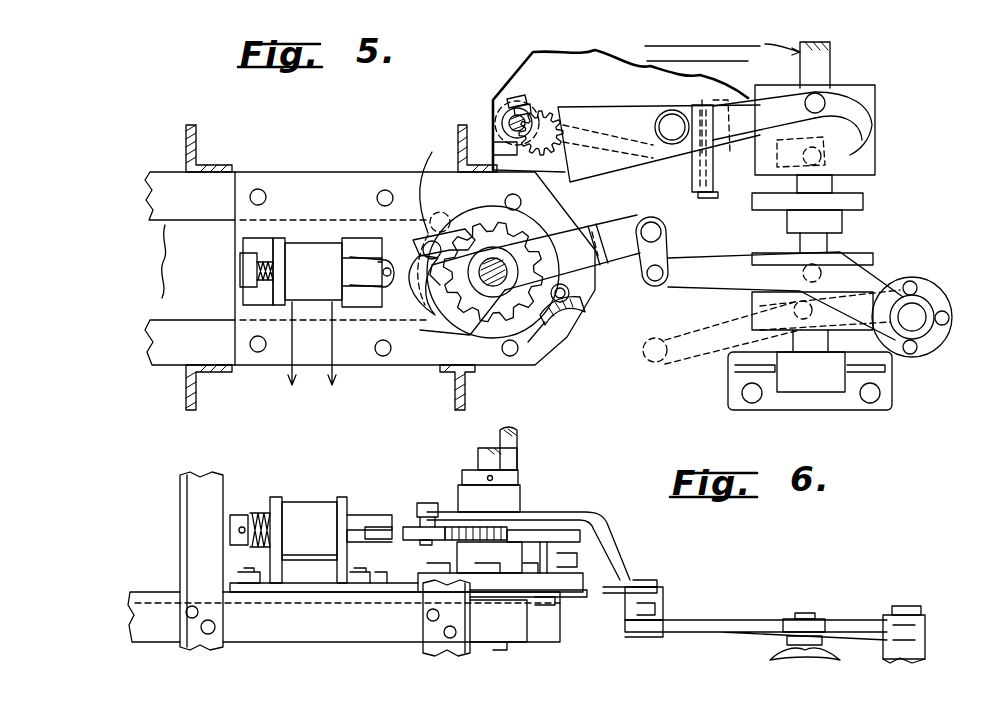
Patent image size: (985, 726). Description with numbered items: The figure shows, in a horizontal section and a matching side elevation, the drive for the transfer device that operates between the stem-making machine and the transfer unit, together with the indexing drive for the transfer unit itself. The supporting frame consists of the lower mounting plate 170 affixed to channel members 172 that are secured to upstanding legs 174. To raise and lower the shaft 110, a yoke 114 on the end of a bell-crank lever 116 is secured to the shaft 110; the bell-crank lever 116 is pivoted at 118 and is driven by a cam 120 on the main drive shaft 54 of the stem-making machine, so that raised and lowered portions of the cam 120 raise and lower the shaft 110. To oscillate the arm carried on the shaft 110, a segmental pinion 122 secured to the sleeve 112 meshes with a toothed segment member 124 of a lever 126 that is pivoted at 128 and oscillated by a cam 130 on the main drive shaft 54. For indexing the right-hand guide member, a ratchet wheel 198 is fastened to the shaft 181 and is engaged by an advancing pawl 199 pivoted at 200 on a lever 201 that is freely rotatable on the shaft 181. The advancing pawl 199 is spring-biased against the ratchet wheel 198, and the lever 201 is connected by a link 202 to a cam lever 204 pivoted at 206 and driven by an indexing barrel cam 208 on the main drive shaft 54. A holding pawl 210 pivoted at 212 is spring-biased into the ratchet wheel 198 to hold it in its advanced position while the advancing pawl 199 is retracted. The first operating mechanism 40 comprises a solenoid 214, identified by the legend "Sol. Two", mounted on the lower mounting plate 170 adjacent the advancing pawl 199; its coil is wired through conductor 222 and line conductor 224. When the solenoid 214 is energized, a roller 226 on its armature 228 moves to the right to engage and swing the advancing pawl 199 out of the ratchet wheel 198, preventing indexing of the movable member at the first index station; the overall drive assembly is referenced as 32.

In FIG. 5, the drive mechanism 32 is at (545, 343).
In FIG. 6, the drive mechanism 32 is at (552, 622).
In FIG. 5, the first operating mechanism 40 is at (317, 246).
In FIG. 6, the first operating mechanism 40 is at (308, 508).
In FIG. 5, the main drive shaft 54 is at (830, 62).
In FIG. 5, the shaft 110 is at (505, 120).
In FIG. 6, the shaft 110 is at (517, 440).
In FIG. 5, the sleeve 112 is at (523, 106).
In FIG. 5, the yoke 114 is at (517, 98).
In FIG. 5, the bell-crank lever 116 is at (690, 182).
In FIG. 5, the pivot 118 is at (708, 198).
In FIG. 5, the cam 120 is at (863, 200).
In FIG. 5, the segmental pinion 122 is at (548, 104).
In FIG. 5, the toothed segment member 124 is at (630, 115).
In FIG. 5, the lever 126 is at (750, 105).
In FIG. 5, the pivot 128 is at (670, 118).
In FIG. 5, the cam 130 is at (875, 143).
In FIG. 5, the lower mounting plate 170 is at (268, 174).
In FIG. 6, the lower mounting plate 170 is at (368, 593).
In FIG. 5, the channel members 172 is at (190, 268).
In FIG. 6, the channel members 172 is at (128, 612).
In FIG. 5, the legs 174 is at (186, 134).
In FIG. 6, the legs 174 is at (195, 510).
In FIG. 5, the shaft 181 is at (478, 280).
In FIG. 6, the shaft 181 is at (518, 465).
In FIG. 5, the ratchet wheel 198 is at (480, 300).
In FIG. 6, the ratchet wheel 198 is at (490, 527).
In FIG. 5, the advancing pawl 199 is at (484, 238).
In FIG. 6, the advancing pawl 199 is at (408, 527).
In FIG. 5, the pivot 200 is at (444, 238).
In FIG. 6, the pivot 200 is at (428, 545).
In FIG. 5, the lever 201 is at (577, 240).
In FIG. 6, the lever 201 is at (583, 512).
In FIG. 5, the link 202 is at (668, 253).
In FIG. 6, the link 202 is at (663, 602).
In FIG. 5, the cam lever 204 is at (895, 282).
In FIG. 6, the cam lever 204 is at (766, 620).
In FIG. 5, the pivot 206 is at (915, 360).
In FIG. 6, the pivot 206 is at (888, 622).
In FIG. 5, the indexing barrel cam 208 is at (855, 258).
In FIG. 6, the indexing barrel cam 208 is at (768, 657).
In FIG. 5, the holding pawl 210 is at (565, 333).
In FIG. 6, the holding pawl 210 is at (585, 535).
In FIG. 5, the pivot 212 is at (570, 292).
In FIG. 5, the solenoid 214 is at (312, 297).
In FIG. 6, the solenoid 214 is at (288, 502).
In FIG. 5, the conductor 222 is at (335, 380).
In FIG. 5, the line conductor 224 is at (289, 378).
In FIG. 5, the roller 226 is at (380, 307).
In FIG. 6, the roller 226 is at (380, 526).
In FIG. 5, the armature 228 is at (362, 258).
In FIG. 6, the armature 228 is at (355, 515).